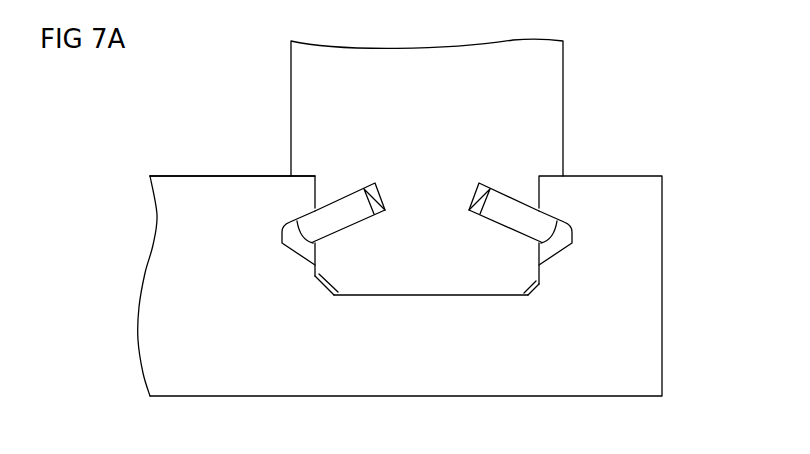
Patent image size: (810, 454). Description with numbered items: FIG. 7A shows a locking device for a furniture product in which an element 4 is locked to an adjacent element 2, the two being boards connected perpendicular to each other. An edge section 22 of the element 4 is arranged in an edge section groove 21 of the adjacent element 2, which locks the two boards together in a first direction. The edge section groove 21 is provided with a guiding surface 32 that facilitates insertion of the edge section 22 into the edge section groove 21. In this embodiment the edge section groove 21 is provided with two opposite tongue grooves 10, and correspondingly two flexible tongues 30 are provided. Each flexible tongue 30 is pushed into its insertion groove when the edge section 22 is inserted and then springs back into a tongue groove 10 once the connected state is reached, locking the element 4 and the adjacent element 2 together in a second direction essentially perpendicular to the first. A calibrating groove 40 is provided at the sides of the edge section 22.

The adjacent element 2 is at (640, 253).
The element 4 is at (493, 150).
The tongue groove 10 is at (287, 243).
The edge section groove 21 is at (315, 277).
The edge section 22 is at (433, 267).
The flexible tongue 30 is at (333, 222).
The guiding surface 32 is at (316, 178).
The calibrating groove 40 is at (313, 200).